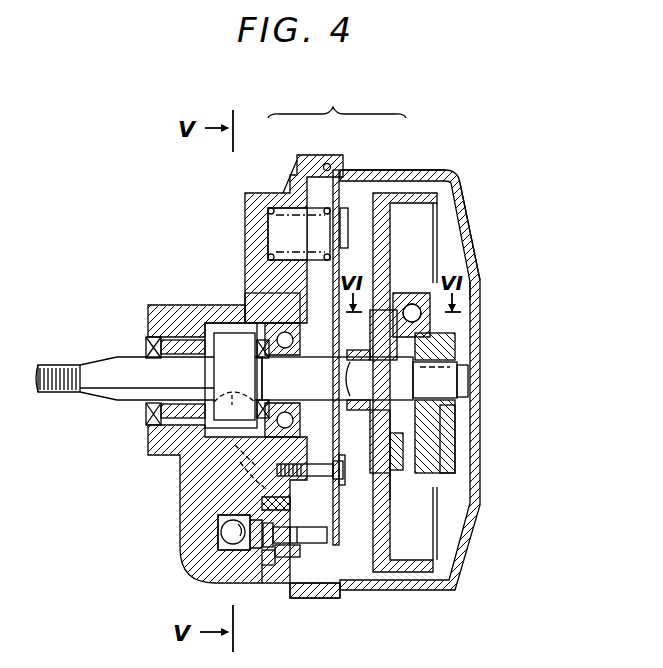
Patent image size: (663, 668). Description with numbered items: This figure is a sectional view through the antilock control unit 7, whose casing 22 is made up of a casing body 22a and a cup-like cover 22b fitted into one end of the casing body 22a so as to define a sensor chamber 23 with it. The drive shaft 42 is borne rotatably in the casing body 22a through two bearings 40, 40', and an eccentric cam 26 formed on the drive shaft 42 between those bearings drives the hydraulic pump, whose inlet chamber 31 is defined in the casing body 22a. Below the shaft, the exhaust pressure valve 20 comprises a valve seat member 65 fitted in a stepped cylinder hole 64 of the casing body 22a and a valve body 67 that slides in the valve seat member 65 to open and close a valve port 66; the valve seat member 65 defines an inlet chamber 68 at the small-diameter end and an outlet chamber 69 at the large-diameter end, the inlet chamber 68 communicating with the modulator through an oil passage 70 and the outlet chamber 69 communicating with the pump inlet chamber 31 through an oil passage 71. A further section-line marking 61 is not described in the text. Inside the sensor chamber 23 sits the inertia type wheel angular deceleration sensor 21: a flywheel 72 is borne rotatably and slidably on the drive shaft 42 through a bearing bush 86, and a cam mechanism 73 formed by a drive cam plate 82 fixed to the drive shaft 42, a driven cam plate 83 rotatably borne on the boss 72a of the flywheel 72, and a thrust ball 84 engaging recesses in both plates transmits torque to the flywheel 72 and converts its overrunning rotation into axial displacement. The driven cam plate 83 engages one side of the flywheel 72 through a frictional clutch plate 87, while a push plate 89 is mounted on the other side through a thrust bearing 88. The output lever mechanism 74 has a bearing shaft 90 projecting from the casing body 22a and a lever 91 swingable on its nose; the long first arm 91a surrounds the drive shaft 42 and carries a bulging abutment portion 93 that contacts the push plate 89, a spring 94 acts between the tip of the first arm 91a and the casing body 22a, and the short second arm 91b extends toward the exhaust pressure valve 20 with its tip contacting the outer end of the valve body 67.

The antilock control unit 7 is at (440, 170).
The exhaust pressure valve 20 is at (222, 578).
The inertia type wheel angular deceleration sensor 21 is at (448, 250).
The casing 22 is at (337, 101).
The casing body 22a is at (273, 192).
The cup-like cover 22b is at (368, 172).
The sensor chamber 23 is at (466, 255).
The eccentric cam 26 is at (233, 348).
The inlet chamber 31 is at (231, 375).
The bearing 40 is at (149, 378).
The bearing 40' is at (335, 378).
The drive shaft 42 is at (126, 357).
The pin 61 is at (268, 500).
The stepped cylinder hole 64 is at (226, 540).
The valve seat member 65 is at (296, 545).
The valve port 66 is at (258, 566).
The valve body 67 is at (285, 557).
The inlet chamber 68 is at (236, 520).
The outlet chamber 69 is at (268, 565).
The oil passage 70 is at (222, 531).
The oil passage 71 is at (258, 470).
The flywheel 72 is at (391, 230).
The boss 72a is at (425, 432).
The cam mechanism 73 is at (412, 300).
The output lever mechanism 74 is at (343, 240).
The drive cam plate 82 is at (432, 462).
The driven cam plate 83 is at (399, 470).
The thrust ball 84 is at (424, 316).
The bearing bush 86 is at (421, 383).
The frictional clutch plate 87 is at (391, 500).
The thrust bearing 88 is at (372, 391).
The push plate 89 is at (343, 470).
The bearing shaft 90 is at (343, 484).
The lever 91 is at (340, 256).
The first arm 91a is at (330, 262).
The second arm 91b is at (338, 540).
The abutment portion 93 is at (348, 380).
The spring 94 is at (268, 210).